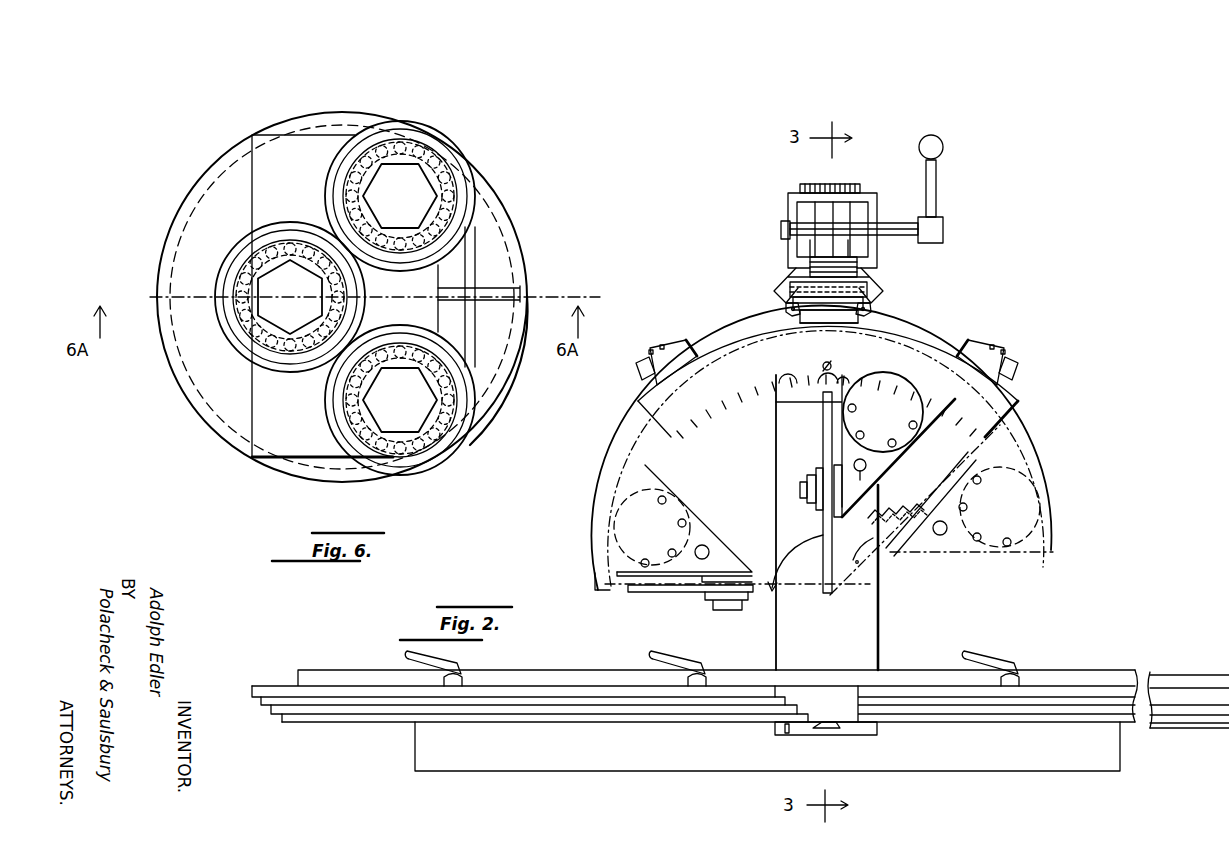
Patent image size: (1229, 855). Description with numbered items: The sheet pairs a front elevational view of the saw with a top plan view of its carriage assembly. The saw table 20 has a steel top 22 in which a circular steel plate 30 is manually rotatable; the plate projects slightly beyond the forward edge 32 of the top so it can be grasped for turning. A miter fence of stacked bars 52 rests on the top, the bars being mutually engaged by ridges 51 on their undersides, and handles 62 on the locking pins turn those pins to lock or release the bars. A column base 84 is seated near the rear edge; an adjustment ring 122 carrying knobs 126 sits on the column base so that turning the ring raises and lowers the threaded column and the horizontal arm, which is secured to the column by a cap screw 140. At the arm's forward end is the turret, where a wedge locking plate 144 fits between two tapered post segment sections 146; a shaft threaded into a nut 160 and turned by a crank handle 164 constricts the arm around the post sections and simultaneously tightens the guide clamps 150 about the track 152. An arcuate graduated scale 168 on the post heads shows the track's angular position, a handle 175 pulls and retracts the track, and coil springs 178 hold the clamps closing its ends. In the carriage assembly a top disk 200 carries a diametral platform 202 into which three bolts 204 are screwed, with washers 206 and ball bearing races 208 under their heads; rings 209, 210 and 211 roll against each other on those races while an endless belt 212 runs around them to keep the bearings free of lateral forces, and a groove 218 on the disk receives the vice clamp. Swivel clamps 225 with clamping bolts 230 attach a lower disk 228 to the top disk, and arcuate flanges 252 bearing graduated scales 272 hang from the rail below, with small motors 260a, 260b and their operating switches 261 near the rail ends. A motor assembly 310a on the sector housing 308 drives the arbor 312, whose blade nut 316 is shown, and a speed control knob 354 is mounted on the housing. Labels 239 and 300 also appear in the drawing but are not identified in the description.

In FIG. 6, the top disk 200 is at (235, 405).
In FIG. 6, the platform 202 is at (285, 138).
In FIG. 6, the bolts 204 is at (402, 420).
In FIG. 6, the washers 206 is at (428, 186).
In FIG. 6, the ball bearing races 208 is at (392, 126).
In FIG. 6, the ring 209 is at (440, 152).
In FIG. 6, the ring 210 is at (468, 426).
In FIG. 6, the bolt holding ring 211 is at (228, 266).
In FIG. 6, the endless belt 212 is at (472, 232).
In FIG. 6, the groove 218 is at (500, 292).
In FIG. 6, the arcuate segment 239 is at (507, 362).
In FIG. 2, the saw table 20 is at (590, 768).
In FIG. 2, the steel top 22 is at (1122, 748).
In FIG. 2, the circular steel plate 30 is at (785, 736).
In FIG. 2, the forward edge 32 is at (714, 746).
In FIG. 2, the ridges 51 is at (252, 698).
In FIG. 2, the bars 52 is at (1067, 700).
In FIG. 2, the handles 62 is at (1013, 668).
In FIG. 2, the column base 84 is at (860, 628).
In FIG. 2, the adjustment ring 122 is at (804, 392).
In FIG. 2, the knobs 126 is at (778, 390).
In FIG. 2, the cap screw 140 is at (830, 728).
In FIG. 2, the wedge locking plate 144 is at (832, 221).
In FIG. 2, the post segment sections 146 is at (844, 234).
In FIG. 2, the guide clamp 150 is at (877, 281).
In FIG. 2, the track 152 is at (790, 284).
In FIG. 2, the nut 160 is at (781, 226).
In FIG. 2, the crank handle 164 is at (934, 186).
In FIG. 2, the arcuate graduated scale 168 is at (833, 187).
In FIG. 2, the handle 175 is at (812, 244).
In FIG. 2, the coil springs 178 is at (820, 300).
In FIG. 2, the arcuate swivel clamp 225 is at (792, 340).
In FIG. 2, the lower disk 228 is at (836, 322).
In FIG. 2, the clamping bolts 230 is at (866, 312).
In FIG. 2, the arcuate flanges 252 is at (1012, 410).
In FIG. 2, the small motor 260a is at (996, 361).
In FIG. 2, the small motor 260b is at (678, 342).
In FIG. 2, the operating switches 261 is at (660, 342).
In FIG. 2, the graduated scales 272 is at (962, 418).
In FIG. 2, the slide 300 is at (903, 463).
In FIG. 2, the sector housing 308 is at (890, 451).
In FIG. 2, the motor assembly 310a is at (890, 382).
In FIG. 2, the arbor 312 is at (800, 494).
In FIG. 2, the nut 316 is at (817, 468).
In FIG. 2, the speed control knob 354 is at (857, 478).